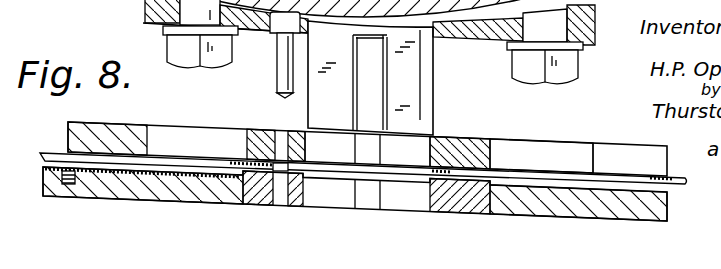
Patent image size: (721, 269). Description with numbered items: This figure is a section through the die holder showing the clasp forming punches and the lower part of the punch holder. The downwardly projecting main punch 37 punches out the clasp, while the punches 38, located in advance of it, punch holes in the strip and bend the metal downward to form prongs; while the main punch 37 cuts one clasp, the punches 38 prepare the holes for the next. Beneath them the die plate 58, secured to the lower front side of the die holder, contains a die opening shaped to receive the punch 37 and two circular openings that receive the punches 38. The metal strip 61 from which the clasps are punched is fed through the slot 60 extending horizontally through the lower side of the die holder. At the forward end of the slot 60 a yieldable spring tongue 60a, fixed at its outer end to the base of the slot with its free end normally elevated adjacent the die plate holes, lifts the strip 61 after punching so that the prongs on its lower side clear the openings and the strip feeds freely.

The main punch 37 is at (447, 80).
The punch 38 is at (277, 75).
The die plate 58 is at (465, 158).
The slot 60 is at (573, 189).
The spring tongue 60a is at (180, 170).
The metal strip 61 is at (544, 171).